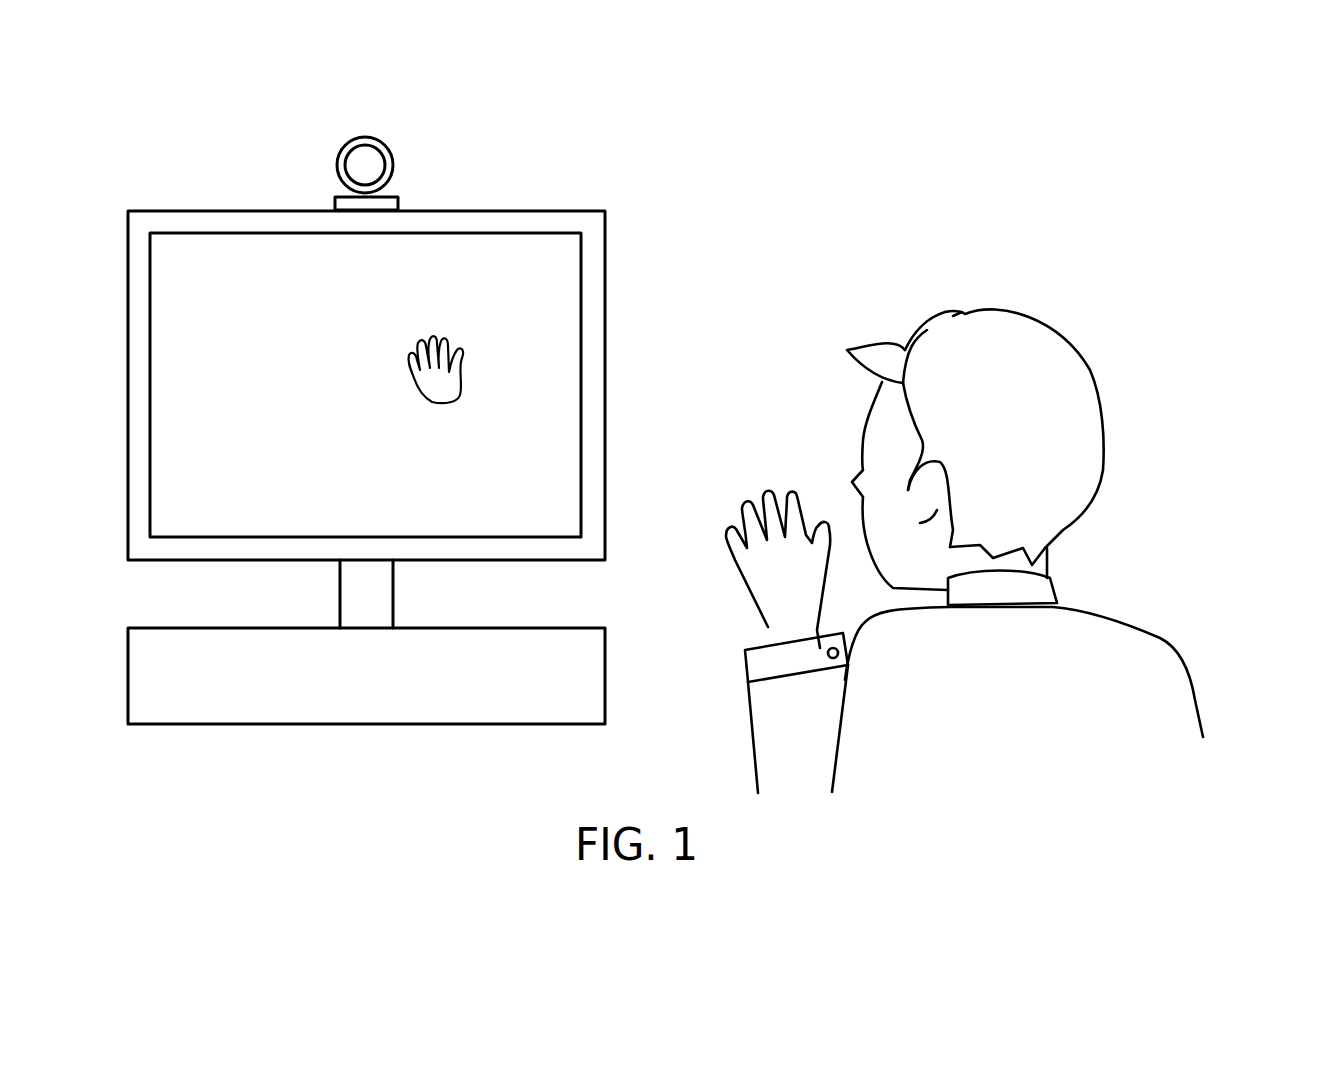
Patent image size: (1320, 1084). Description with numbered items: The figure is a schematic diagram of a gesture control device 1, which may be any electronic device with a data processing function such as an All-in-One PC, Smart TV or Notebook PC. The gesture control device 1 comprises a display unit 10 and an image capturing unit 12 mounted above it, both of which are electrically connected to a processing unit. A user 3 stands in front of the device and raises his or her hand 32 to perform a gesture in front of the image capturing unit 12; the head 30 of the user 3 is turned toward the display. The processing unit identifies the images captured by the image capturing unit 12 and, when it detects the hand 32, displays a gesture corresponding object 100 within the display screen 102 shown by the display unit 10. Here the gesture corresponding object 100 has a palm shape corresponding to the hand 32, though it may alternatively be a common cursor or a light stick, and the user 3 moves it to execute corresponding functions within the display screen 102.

The gesture control device 1 is at (583, 152).
The display unit 10 is at (565, 278).
The image capturing unit 12 is at (372, 162).
The gesture corresponding object 100 is at (448, 378).
The display screen 102 is at (236, 295).
The user 3 is at (1128, 352).
The head of user 30 is at (865, 434).
The hand 32 is at (770, 570).